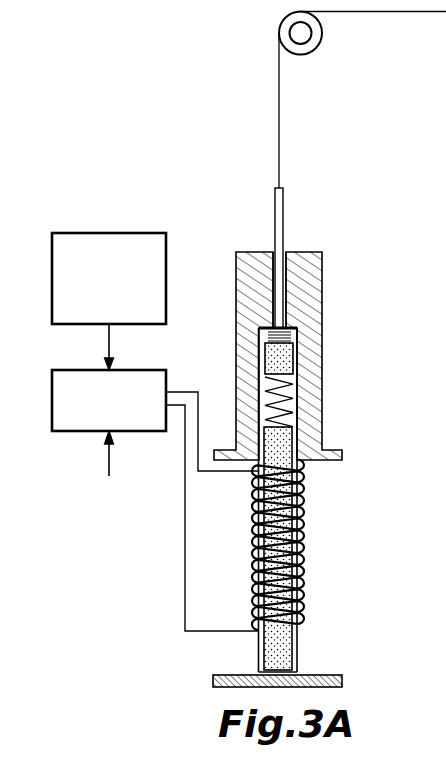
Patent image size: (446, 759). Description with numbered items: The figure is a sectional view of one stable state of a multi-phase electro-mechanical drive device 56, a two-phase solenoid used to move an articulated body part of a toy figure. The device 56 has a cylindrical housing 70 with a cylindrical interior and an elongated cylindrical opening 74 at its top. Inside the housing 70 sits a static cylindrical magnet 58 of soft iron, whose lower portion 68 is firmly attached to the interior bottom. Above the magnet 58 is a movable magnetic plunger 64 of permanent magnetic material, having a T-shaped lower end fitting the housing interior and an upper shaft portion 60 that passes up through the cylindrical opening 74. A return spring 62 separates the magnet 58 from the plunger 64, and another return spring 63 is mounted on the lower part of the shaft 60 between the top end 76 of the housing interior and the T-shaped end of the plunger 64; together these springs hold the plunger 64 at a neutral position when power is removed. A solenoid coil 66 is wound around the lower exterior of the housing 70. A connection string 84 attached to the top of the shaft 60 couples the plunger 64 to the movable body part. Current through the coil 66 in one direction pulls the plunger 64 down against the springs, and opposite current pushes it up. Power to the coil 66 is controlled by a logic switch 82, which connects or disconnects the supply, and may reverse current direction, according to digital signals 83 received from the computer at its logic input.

The multi-phase electro-mechanical drive device 56 is at (349, 240).
The static cylindrical magnet 58 is at (293, 438).
The upper shaft portion 60 is at (274, 228).
The return spring 62 is at (293, 405).
The return spring 63 is at (294, 337).
The movable magnetic plunger 64 is at (265, 360).
The solenoid coil 66 is at (318, 463).
The lower portion of the static magnet 68 is at (292, 652).
The cylindrical housing 70 is at (322, 272).
The elongated cylindrical opening 74 is at (300, 258).
The top end of the housing's cylindrical interior 76 is at (297, 328).
The logic switch circuitry 82 is at (78, 370).
The digital signals 83 is at (78, 233).
The connection string 84 is at (353, 12).